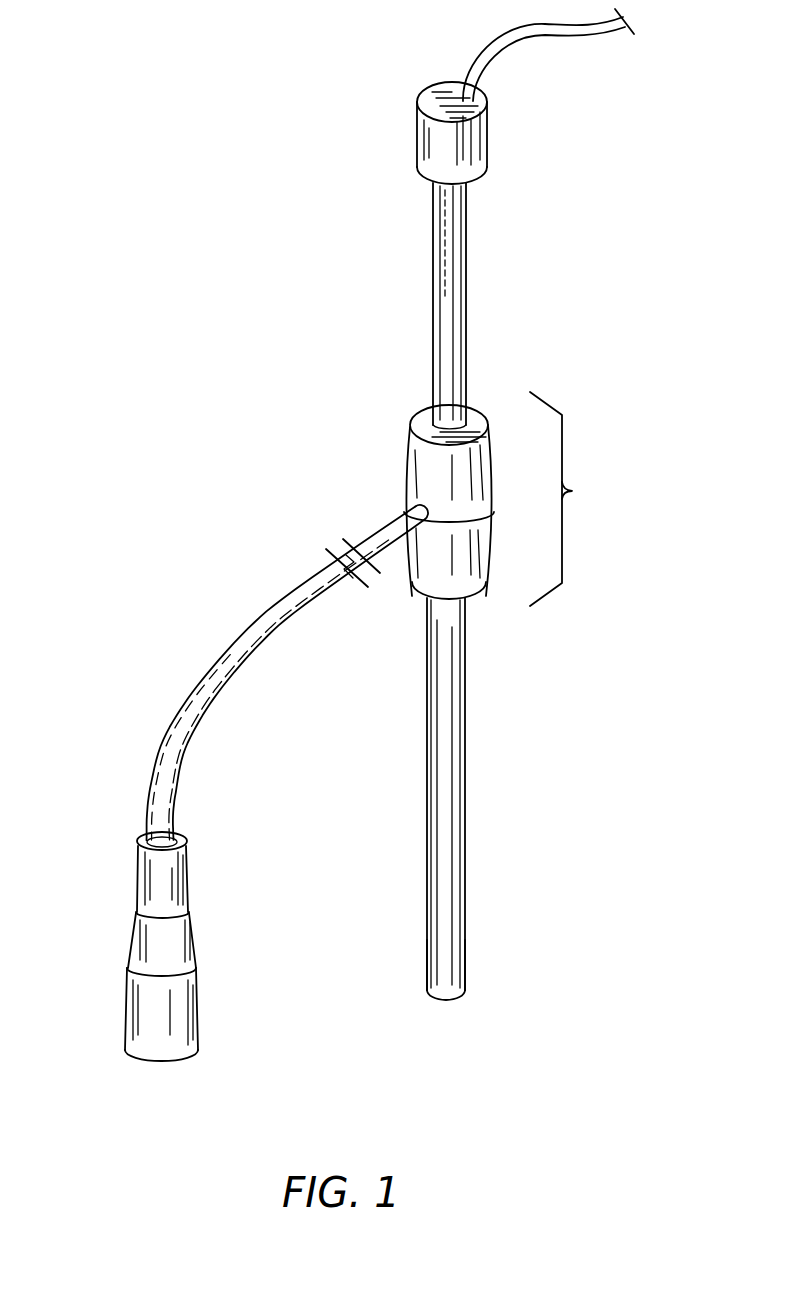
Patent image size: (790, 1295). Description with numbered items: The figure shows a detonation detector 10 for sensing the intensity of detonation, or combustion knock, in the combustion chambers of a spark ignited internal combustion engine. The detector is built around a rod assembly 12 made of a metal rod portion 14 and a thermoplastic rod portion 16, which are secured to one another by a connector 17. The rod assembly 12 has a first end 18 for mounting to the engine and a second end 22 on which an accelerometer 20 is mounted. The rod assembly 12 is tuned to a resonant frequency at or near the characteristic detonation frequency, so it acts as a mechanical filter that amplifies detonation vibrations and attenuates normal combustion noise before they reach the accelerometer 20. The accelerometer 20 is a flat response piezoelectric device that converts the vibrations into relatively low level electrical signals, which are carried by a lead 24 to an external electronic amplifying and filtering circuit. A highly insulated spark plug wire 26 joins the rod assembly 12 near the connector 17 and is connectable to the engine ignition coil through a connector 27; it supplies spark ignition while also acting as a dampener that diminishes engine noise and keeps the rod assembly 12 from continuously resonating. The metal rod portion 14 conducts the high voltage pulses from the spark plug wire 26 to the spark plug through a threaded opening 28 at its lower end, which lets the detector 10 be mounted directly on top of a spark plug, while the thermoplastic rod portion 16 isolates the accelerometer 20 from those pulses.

The detonation detector 10 is at (336, 441).
The rod assembly 12 is at (573, 491).
The metal rod portion 14 is at (460, 778).
The thermoplastic rod portion 16 is at (467, 305).
The connector 17 is at (490, 478).
The first end 18 is at (465, 966).
The accelerometer 20 is at (417, 137).
The second end 22 is at (468, 186).
The lead 24 is at (586, 40).
The spark plug wire 26 is at (207, 710).
The connector 27 is at (130, 935).
The threaded opening 28 is at (450, 1002).